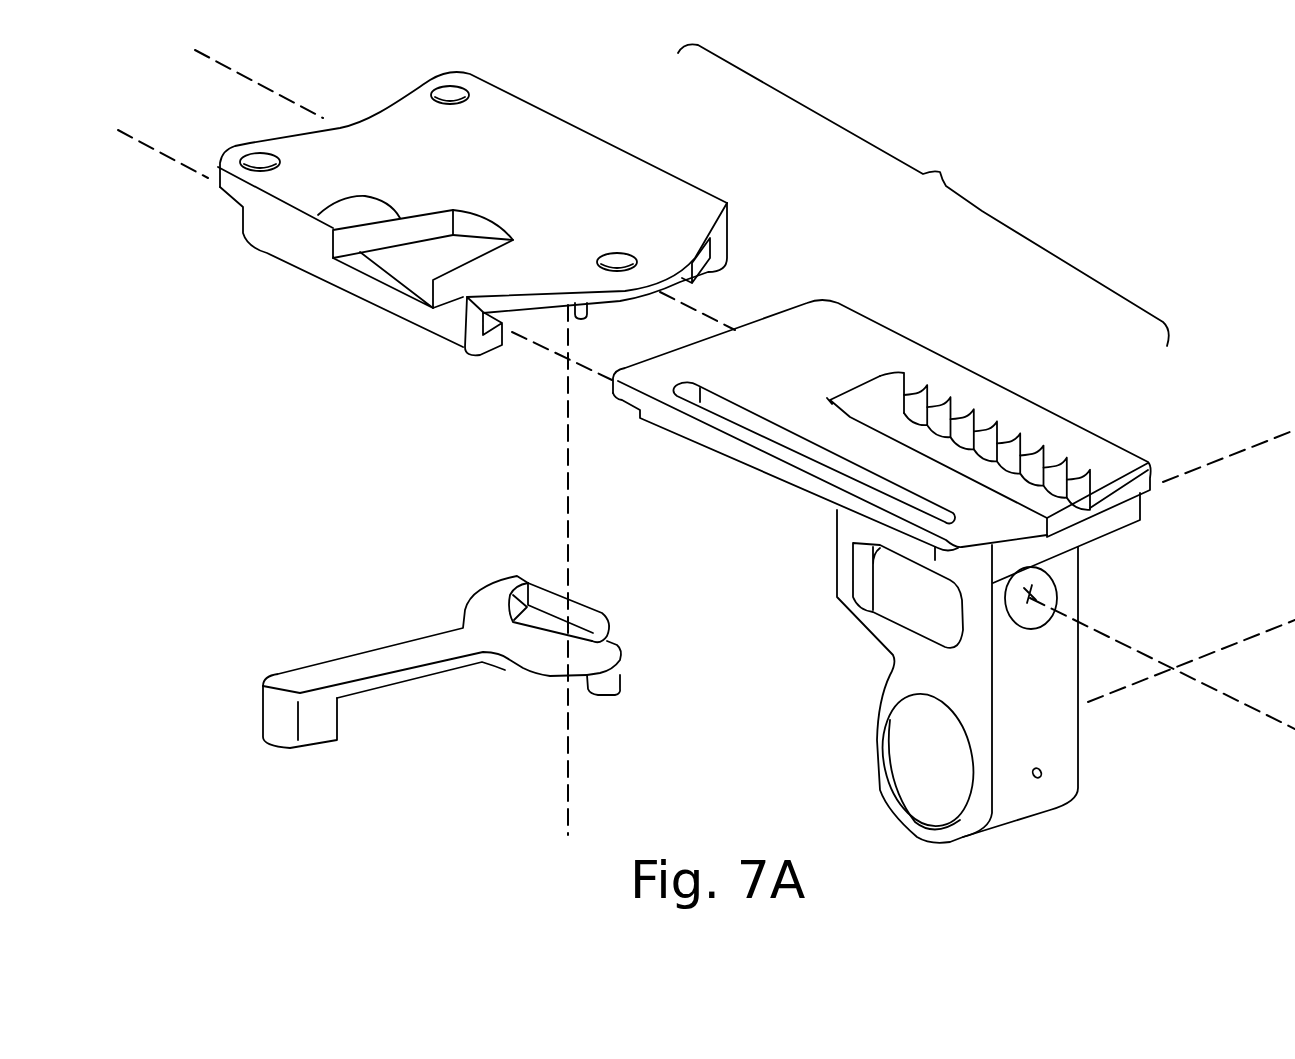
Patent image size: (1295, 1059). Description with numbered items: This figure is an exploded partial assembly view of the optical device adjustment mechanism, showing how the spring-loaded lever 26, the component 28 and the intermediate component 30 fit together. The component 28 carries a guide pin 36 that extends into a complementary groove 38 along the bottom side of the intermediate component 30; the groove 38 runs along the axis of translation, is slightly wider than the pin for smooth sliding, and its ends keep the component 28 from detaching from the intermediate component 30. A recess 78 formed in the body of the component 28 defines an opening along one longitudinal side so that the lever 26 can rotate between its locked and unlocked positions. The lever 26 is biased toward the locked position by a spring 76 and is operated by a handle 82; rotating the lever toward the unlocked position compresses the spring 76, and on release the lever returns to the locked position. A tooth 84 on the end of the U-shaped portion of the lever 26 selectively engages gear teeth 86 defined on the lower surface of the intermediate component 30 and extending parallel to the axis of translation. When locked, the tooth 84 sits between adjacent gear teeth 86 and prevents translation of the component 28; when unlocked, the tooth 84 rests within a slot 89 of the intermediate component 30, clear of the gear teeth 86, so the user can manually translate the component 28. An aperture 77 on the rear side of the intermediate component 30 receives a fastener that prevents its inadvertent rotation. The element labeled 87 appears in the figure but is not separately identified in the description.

The lever 26 is at (493, 686).
The component 28 is at (566, 186).
The intermediate component 30 is at (1061, 740).
The guide pin 36 is at (580, 318).
The groove 38 is at (837, 468).
The spring 76 is at (588, 603).
The aperture 77 is at (1043, 777).
The recess 78 is at (318, 215).
The handle 82 is at (328, 725).
The tooth 84 is at (625, 678).
The gear teeth 86 is at (1007, 433).
The base plate 87 is at (860, 320).
The slot 89 is at (848, 392).